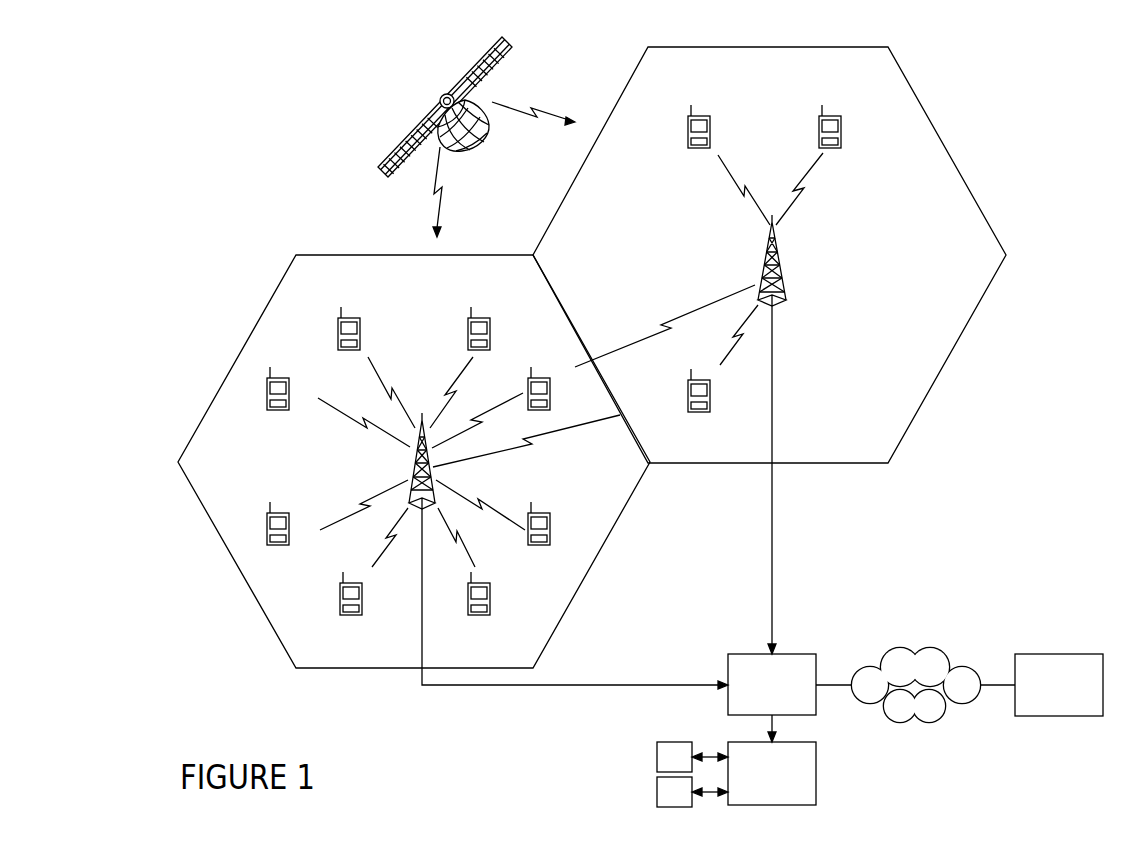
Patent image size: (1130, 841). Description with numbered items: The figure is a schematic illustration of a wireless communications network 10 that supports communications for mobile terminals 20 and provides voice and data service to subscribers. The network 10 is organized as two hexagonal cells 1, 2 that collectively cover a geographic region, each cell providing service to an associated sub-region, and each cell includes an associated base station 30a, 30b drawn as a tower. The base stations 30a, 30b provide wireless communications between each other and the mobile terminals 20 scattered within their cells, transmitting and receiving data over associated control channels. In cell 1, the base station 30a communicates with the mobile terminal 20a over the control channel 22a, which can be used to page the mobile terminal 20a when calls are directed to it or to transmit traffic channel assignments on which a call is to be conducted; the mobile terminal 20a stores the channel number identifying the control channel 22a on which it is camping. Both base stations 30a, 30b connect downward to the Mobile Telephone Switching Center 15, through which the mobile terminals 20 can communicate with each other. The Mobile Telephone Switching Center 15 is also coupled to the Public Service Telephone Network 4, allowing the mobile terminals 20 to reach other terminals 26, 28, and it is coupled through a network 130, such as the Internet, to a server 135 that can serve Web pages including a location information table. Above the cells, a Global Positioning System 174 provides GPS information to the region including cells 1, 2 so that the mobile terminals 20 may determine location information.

The wireless communications network 10 is at (1100, 106).
The cell 1 is at (955, 335).
The cell 2 is at (273, 635).
The mobile terminal 20 is at (842, 131).
The mobile terminal 20a is at (711, 131).
The control channel 22a is at (735, 187).
The base station 30a is at (762, 266).
The base station 30b is at (410, 468).
The Global Positioning System 174 is at (447, 100).
The Mobile Telephone Switching Center 15 is at (761, 709).
The Public Service Telephone Network 4 is at (766, 797).
The terminal 28 is at (663, 767).
The terminal 26 is at (663, 802).
The network 130 is at (899, 695).
The server 135 is at (1042, 695).